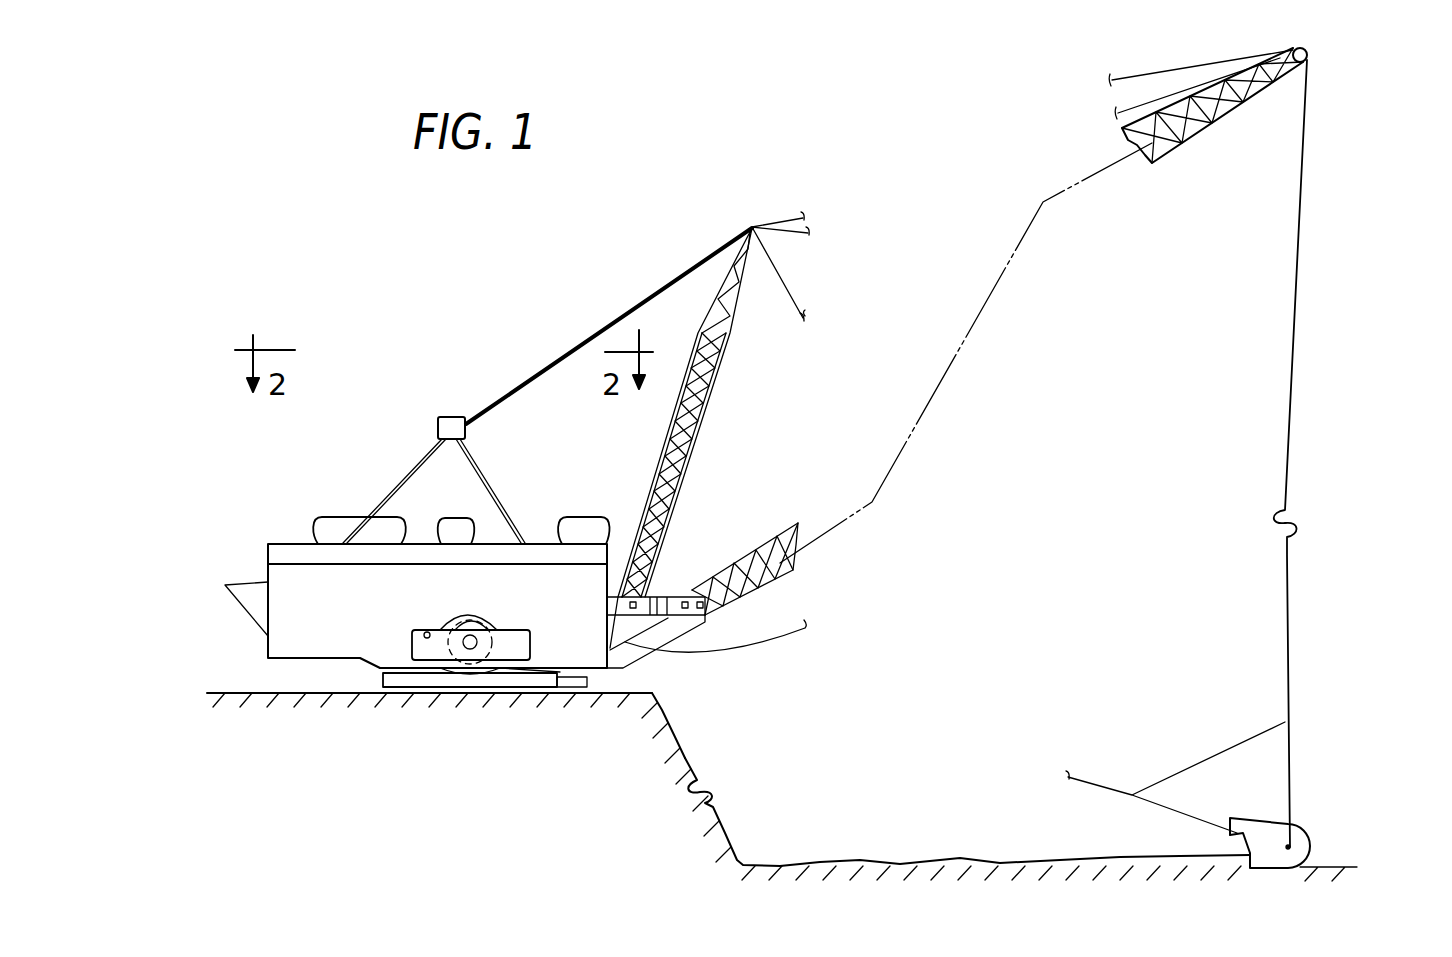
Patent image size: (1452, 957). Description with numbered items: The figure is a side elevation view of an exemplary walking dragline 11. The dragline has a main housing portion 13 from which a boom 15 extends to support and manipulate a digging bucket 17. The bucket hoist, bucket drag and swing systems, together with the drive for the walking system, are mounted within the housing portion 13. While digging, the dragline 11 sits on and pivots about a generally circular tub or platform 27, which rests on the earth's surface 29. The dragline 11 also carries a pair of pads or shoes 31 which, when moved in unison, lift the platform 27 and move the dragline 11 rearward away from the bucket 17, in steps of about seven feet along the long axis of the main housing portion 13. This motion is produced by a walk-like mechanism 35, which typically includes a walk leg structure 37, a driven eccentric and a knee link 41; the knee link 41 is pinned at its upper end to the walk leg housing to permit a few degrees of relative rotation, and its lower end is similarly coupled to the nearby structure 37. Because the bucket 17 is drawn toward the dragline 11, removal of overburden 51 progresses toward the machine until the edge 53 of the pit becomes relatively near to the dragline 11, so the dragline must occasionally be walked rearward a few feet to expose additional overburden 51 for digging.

The walking dragline 11 is at (399, 428).
The main housing portion 13 is at (285, 578).
The boom 15 is at (775, 535).
The digging bucket 17 is at (1298, 830).
The tub or platform 27 is at (590, 688).
The earth's surface 29 is at (255, 692).
The pads or shoes 31 is at (397, 678).
The walk-like mechanism 35 is at (404, 610).
The walk leg structure 37 is at (413, 642).
The knee link 41 is at (440, 633).
The overburden 51 is at (685, 758).
The edge of the pit 53 is at (657, 700).